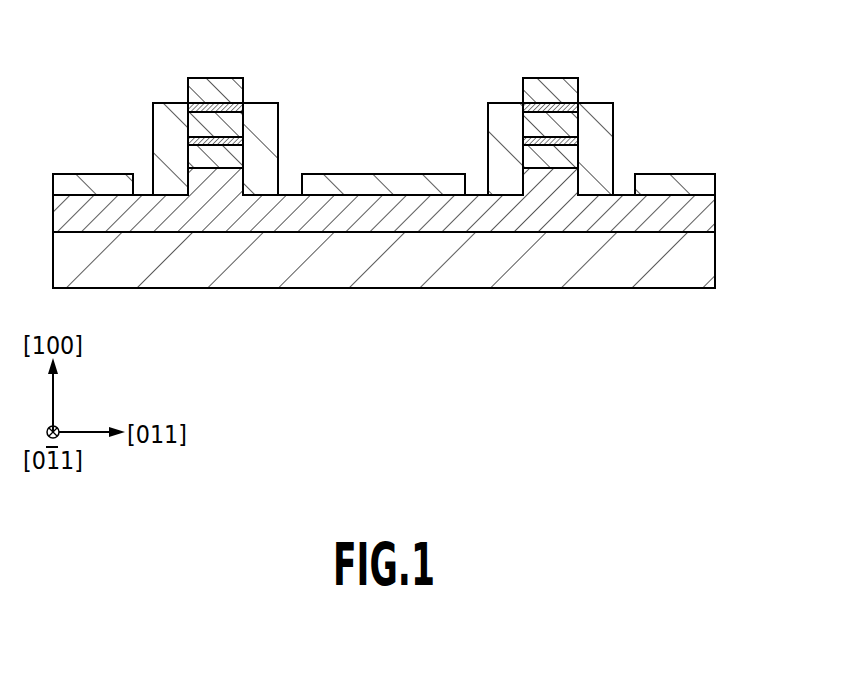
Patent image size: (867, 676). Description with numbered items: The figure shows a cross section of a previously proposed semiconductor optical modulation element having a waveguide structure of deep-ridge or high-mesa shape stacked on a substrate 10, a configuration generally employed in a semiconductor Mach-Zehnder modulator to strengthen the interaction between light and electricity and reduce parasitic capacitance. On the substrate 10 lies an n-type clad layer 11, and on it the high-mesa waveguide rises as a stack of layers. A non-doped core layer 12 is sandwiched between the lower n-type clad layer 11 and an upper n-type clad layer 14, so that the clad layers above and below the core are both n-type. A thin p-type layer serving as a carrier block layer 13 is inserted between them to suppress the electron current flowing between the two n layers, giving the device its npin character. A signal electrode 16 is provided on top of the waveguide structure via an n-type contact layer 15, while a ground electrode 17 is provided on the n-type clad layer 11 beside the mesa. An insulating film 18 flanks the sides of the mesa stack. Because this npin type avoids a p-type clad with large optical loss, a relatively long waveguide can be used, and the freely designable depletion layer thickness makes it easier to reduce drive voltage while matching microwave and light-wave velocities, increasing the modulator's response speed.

The substrate 10 is at (700, 258).
The n-type clad layer 11 is at (700, 210).
The non-doped layer 12 is at (235, 155).
The carrier block layer 13 is at (190, 145).
The n-type clad layer 14 is at (192, 127).
The n-type contact layer 15 is at (240, 100).
The signal electrode 16 is at (212, 85).
The ground electrode 17 is at (73, 180).
The insulating film 18 is at (173, 117).